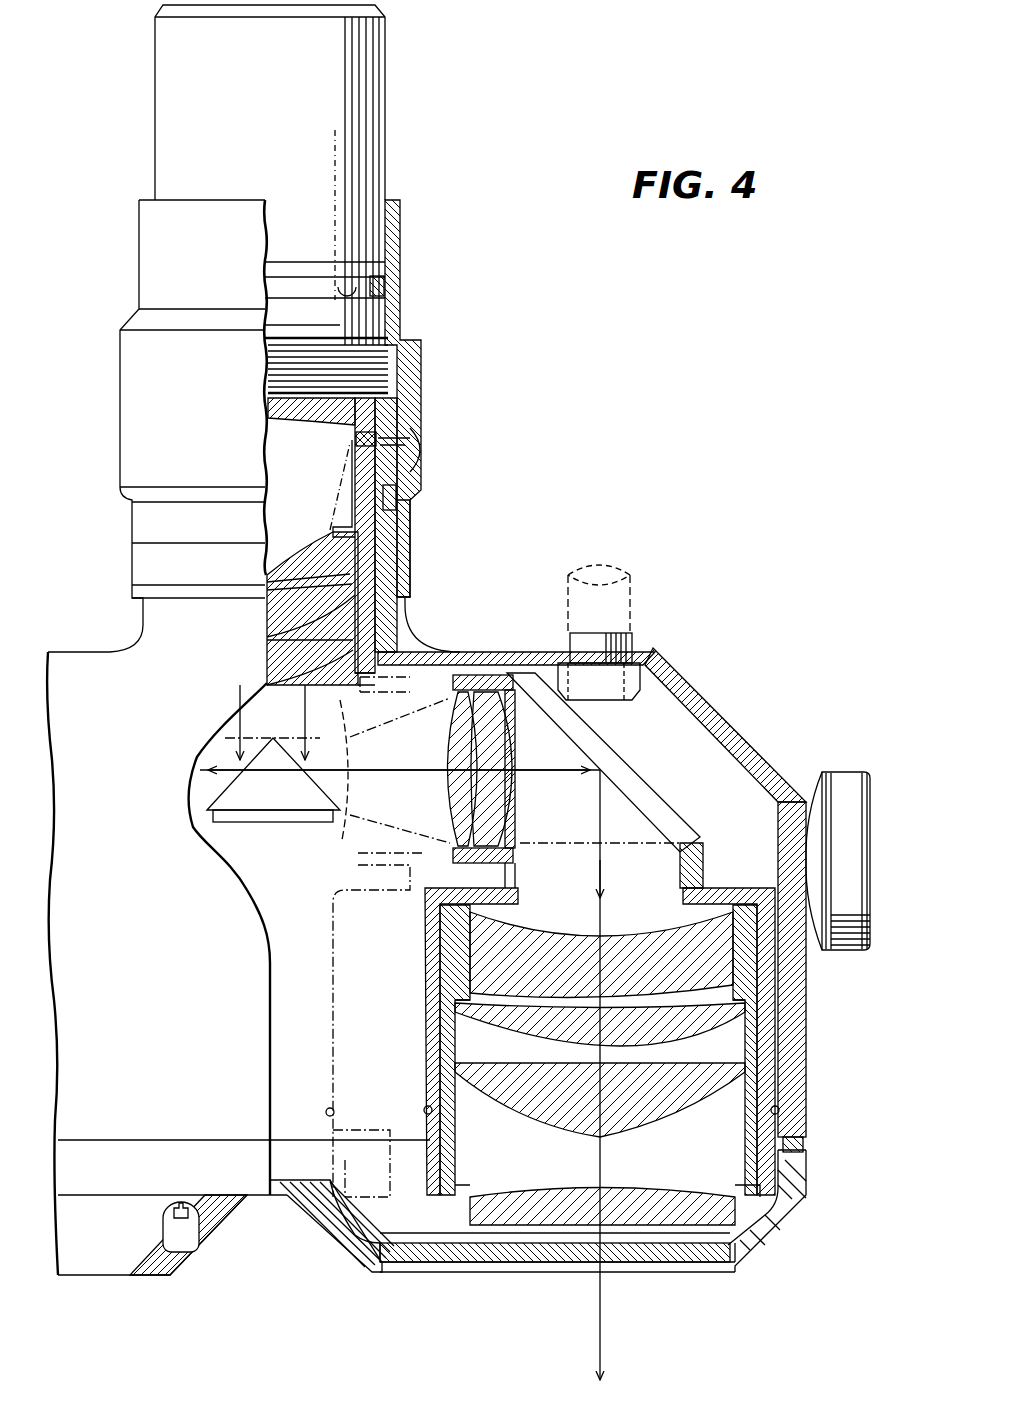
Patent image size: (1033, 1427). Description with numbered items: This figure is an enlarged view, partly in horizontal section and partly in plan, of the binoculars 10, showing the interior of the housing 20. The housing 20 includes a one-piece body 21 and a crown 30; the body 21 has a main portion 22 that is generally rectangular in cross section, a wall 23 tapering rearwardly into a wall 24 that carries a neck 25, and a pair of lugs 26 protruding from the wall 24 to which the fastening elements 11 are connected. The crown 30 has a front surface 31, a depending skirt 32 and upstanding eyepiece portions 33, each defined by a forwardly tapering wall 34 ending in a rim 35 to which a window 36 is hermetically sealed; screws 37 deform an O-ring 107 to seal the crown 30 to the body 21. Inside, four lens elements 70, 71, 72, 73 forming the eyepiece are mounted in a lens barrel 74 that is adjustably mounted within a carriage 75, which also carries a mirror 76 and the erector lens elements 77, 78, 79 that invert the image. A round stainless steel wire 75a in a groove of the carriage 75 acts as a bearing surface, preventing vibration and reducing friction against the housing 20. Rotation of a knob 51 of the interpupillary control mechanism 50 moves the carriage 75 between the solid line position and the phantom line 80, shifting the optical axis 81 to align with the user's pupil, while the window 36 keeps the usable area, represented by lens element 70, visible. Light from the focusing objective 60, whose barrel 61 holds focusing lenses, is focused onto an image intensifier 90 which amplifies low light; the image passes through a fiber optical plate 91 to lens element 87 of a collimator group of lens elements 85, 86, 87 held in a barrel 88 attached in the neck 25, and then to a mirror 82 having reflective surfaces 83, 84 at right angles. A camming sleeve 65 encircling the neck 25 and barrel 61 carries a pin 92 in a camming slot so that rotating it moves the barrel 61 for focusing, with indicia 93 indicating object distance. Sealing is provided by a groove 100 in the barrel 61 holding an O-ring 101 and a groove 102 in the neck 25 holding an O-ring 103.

The binoculars 10 is at (738, 366).
The fastening elements 11 is at (630, 590).
The housing 20 is at (774, 683).
The body 21 is at (698, 685).
The main portion 22 is at (800, 1090).
The wall 23 is at (745, 760).
The wall 24 is at (520, 652).
The neck 25 is at (400, 550).
The lugs 26 is at (622, 652).
The crown 30 is at (358, 1274).
The front surface 31 is at (283, 1180).
The skirt 32 is at (808, 1180).
The eyepiece portions 33 is at (380, 1277).
The wall 34 is at (78, 1265).
The rim 35 is at (395, 1276).
The window 36 is at (480, 1274).
The screws 37 is at (188, 1262).
The interpupillary control mechanism 50 is at (873, 770).
The knobs 51 is at (839, 790).
The focusing objective 60 is at (388, 74).
The barrel 61 is at (378, 140).
The camming sleeve 65 is at (415, 385).
The lens element 70 is at (640, 1195).
The lens element 71 is at (700, 1110).
The lens element 72 is at (688, 1040).
The lens element 73 is at (708, 905).
The lens barrel 74 is at (752, 1072).
The carriage 75 is at (455, 676).
The wire 75a is at (781, 1110).
The mirror 76 is at (652, 790).
The lens element 77 is at (516, 810).
The lens element 78 is at (482, 690).
The lens element 79 is at (452, 745).
The phantom line 80 is at (336, 1025).
The optical axis 81 is at (606, 1322).
The mirror 82 is at (283, 826).
The reflective surface 83 is at (240, 800).
The reflective surface 84 is at (308, 800).
The lens element 85 is at (365, 652).
The lens element 86 is at (292, 605).
The lens element 87 is at (272, 580).
The barrel 88 is at (405, 612).
The image intensifier 90 is at (398, 338).
The fiber optical plate 91 is at (357, 410).
The pin 92 is at (358, 440).
The indicia 93 is at (132, 576).
The groove 100 is at (350, 283).
The O-ring 101 is at (384, 288).
The groove 102 is at (412, 530).
The O-ring 103 is at (398, 500).
The O-ring 107 is at (805, 1145).